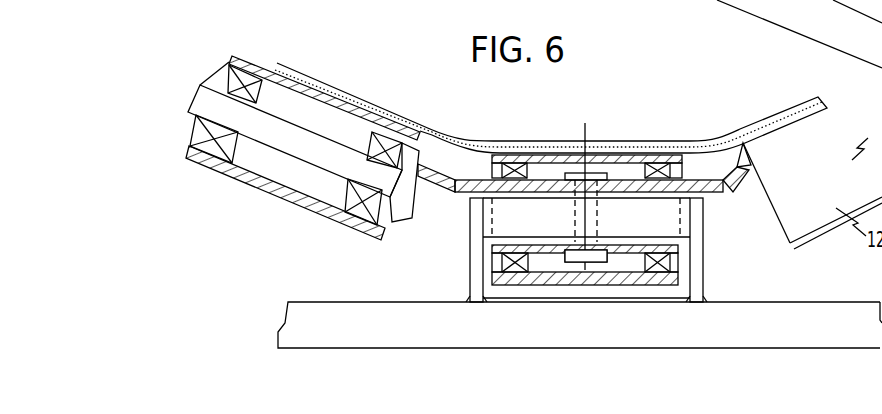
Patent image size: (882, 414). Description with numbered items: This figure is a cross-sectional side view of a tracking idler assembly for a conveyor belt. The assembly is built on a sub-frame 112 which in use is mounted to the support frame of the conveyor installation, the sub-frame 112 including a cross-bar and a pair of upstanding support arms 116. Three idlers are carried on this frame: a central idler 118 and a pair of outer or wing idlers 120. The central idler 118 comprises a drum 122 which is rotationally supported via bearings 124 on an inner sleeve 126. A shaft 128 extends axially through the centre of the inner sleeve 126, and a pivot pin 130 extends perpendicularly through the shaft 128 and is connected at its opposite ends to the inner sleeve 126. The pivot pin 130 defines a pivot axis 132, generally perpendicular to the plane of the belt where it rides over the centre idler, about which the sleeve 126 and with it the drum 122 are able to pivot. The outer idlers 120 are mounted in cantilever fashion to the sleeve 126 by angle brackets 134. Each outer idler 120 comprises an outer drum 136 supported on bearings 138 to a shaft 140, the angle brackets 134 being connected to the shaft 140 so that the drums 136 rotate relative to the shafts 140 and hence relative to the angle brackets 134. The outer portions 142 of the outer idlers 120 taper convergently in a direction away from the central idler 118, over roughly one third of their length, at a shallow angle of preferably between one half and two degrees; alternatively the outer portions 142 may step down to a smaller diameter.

The sub-frame 112 is at (580, 341).
The upstanding support arms 116 is at (470, 265).
The central idler 118 is at (622, 142).
The outer idlers 120 is at (310, 98).
The drum 122 is at (540, 156).
The bearings 124 is at (515, 164).
The inner sleeve 126 is at (585, 291).
The shaft 128 is at (605, 239).
The pivot pin 130 is at (608, 234).
The pivot axis 132 is at (585, 123).
The angle brackets 134 is at (442, 190).
The outer drum 136 is at (285, 205).
The bearings 138 is at (286, 196).
The shaft 140 is at (303, 159).
The outer portions 142 is at (258, 58).